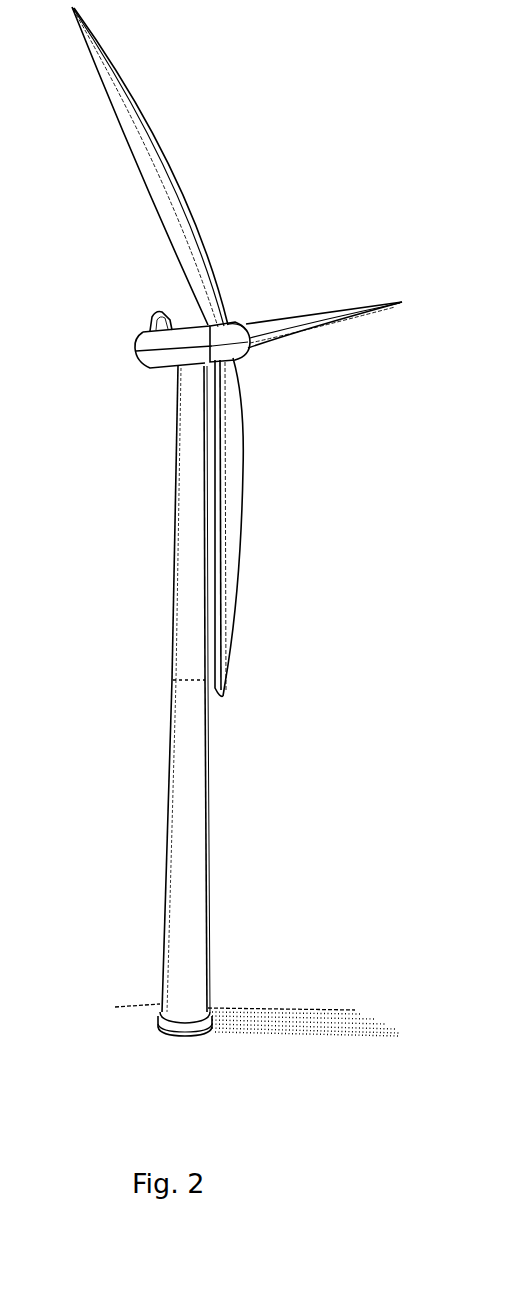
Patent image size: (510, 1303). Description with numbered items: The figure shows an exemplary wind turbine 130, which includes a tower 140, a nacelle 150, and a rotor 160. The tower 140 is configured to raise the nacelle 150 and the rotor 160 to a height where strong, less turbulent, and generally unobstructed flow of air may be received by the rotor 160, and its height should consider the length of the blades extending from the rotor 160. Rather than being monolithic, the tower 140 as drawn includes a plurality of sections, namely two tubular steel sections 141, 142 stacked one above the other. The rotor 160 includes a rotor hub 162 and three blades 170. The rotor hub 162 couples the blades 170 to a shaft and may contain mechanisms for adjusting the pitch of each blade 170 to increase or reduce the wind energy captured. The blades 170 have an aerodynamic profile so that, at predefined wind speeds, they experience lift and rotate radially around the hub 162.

The wind turbine 130 is at (346, 206).
The tower 140 is at (172, 573).
The tubular steel section 141 is at (170, 842).
The tubular steel section 142 is at (178, 502).
The nacelle 150 is at (123, 346).
The rotor 160 is at (243, 352).
The rotor hub 162 is at (233, 323).
The blade 170 is at (101, 85).